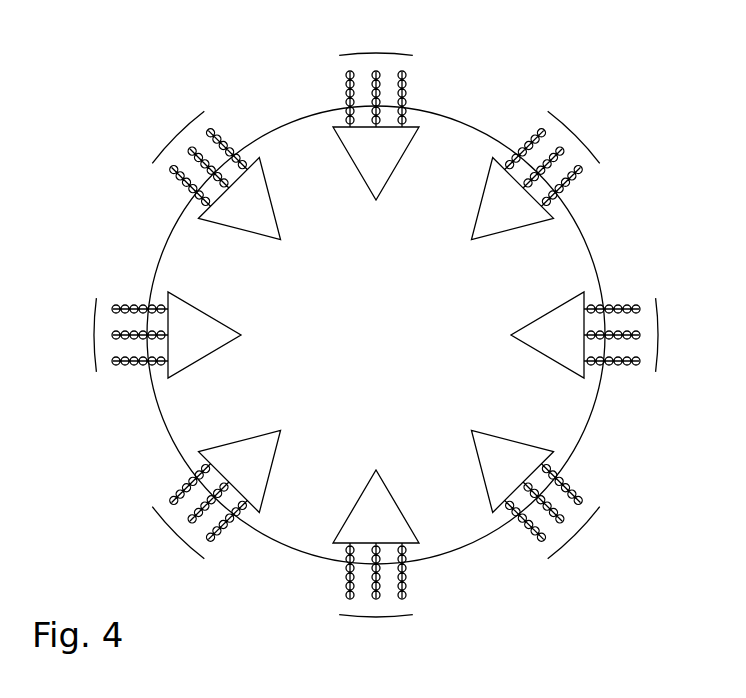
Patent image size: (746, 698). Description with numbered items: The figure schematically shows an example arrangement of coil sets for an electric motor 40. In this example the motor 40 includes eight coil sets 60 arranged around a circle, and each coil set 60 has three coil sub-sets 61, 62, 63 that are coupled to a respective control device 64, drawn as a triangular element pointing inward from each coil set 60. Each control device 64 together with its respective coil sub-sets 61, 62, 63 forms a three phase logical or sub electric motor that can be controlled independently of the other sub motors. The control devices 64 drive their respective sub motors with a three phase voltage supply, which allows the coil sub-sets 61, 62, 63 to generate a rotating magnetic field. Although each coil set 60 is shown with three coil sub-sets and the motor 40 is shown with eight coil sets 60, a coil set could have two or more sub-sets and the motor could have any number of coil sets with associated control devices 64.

The electric motor 40 is at (373, 333).
The coil set 60 is at (373, 333).
The coil sub-set 61 is at (406, 88).
The coil sub-set 62 is at (378, 76).
The coil sub-set 63 is at (348, 98).
The control device 64 is at (382, 167).